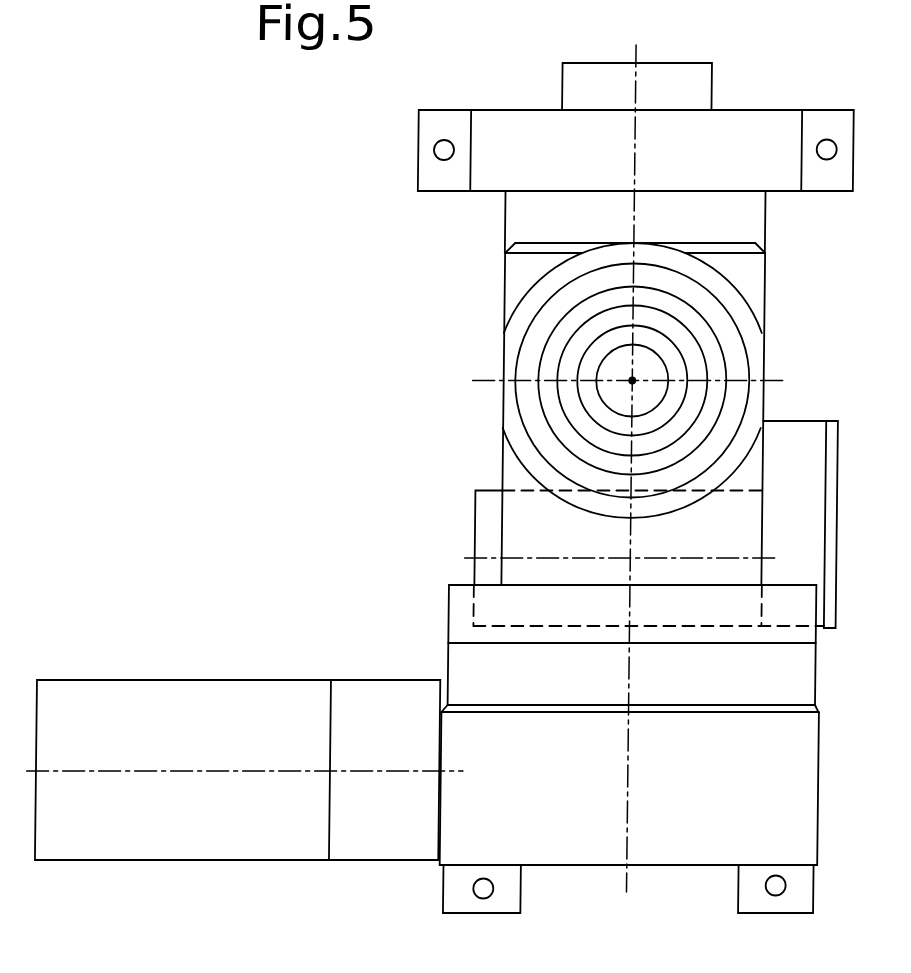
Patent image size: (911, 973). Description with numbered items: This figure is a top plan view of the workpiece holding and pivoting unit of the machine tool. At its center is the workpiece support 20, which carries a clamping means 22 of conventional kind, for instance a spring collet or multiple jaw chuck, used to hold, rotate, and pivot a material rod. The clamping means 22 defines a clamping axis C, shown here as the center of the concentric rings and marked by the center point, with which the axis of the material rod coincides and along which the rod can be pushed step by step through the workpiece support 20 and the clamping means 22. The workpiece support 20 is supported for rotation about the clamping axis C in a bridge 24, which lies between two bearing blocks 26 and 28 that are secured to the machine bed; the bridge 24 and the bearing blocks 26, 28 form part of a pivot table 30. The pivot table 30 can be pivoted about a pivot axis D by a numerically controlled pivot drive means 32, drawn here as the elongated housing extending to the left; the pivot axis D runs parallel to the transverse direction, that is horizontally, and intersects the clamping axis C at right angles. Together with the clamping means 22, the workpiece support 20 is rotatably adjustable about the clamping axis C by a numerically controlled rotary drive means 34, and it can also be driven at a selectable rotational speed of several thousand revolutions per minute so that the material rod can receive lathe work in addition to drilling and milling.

The workpiece support 20 is at (561, 345).
The clamping means 22 is at (588, 395).
The bridge 24 is at (513, 473).
The bearing block 26 is at (526, 124).
The bearing block 28 is at (475, 668).
The pivot table 30 is at (573, 845).
The pivot drive means 32 is at (202, 697).
The rotary drive means 34 is at (493, 528).
The clamping axis C is at (637, 380).
The pivot axis D is at (639, 793).